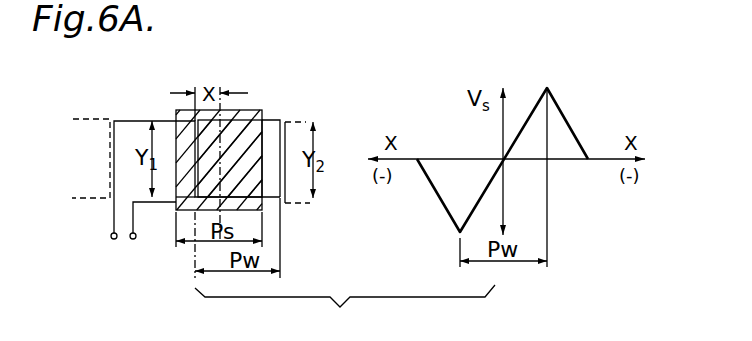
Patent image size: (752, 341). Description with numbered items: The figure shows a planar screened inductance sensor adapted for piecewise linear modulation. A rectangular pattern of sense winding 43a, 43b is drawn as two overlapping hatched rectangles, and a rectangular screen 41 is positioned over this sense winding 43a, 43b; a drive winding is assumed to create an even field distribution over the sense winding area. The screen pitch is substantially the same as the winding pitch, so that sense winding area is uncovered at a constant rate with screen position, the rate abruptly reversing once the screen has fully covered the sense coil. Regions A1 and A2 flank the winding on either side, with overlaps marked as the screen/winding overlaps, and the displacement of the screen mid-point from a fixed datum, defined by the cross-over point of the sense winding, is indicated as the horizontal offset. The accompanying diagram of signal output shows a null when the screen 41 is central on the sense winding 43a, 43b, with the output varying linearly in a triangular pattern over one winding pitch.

The scale electrode 41 is at (245, 208).
The sense winding 43a is at (157, 203).
The sense winding 43b is at (266, 132).
The first receiving electrode A1 is at (143, 132).
The second receiving electrode A2 is at (266, 132).